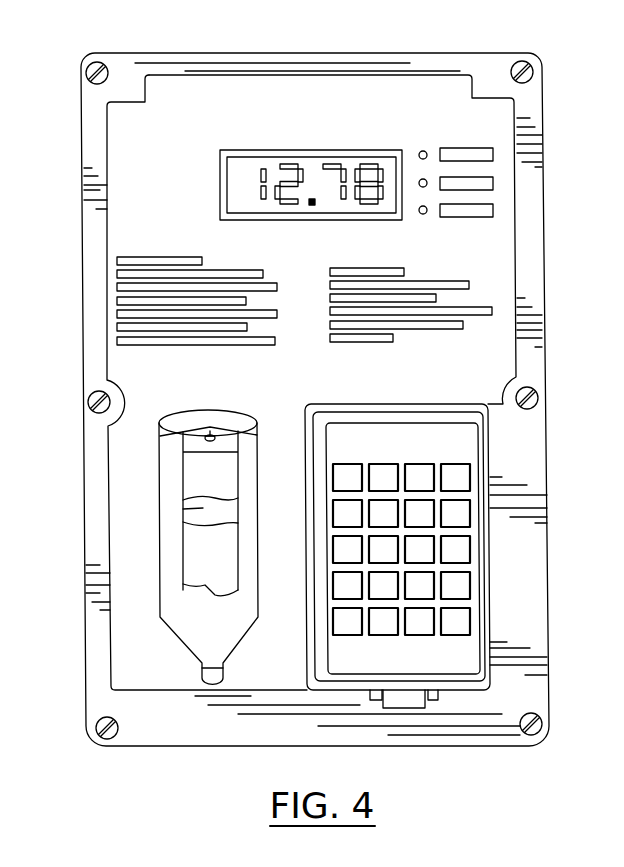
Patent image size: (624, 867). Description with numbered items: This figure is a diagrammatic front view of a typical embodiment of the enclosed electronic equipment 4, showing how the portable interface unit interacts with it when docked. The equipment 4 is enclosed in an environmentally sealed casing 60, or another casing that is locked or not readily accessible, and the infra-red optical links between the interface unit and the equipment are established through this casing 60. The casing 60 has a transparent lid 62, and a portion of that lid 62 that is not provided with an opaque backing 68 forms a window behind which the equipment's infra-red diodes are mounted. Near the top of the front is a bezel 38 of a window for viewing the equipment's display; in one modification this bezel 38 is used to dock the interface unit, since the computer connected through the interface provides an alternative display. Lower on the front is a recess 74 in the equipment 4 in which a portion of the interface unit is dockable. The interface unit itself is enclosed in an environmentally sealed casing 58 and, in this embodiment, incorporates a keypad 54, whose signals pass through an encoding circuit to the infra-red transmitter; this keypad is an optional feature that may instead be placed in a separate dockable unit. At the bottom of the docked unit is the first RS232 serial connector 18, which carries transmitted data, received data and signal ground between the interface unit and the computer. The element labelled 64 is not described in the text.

The enclosed electronic equipment 4 is at (323, 398).
The first RS232 serial connector 18 is at (403, 708).
The bezel 38 is at (311, 150).
The keypad 54 is at (433, 457).
The casing 58 is at (423, 547).
The casing 60 is at (345, 53).
The transparent lid 62 is at (537, 253).
The screw 64 is at (538, 62).
The opaque backing 68 is at (118, 152).
The recess 74 is at (431, 548).